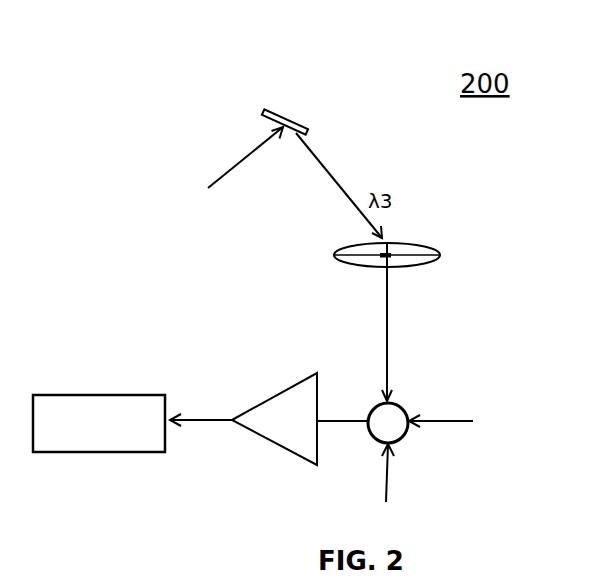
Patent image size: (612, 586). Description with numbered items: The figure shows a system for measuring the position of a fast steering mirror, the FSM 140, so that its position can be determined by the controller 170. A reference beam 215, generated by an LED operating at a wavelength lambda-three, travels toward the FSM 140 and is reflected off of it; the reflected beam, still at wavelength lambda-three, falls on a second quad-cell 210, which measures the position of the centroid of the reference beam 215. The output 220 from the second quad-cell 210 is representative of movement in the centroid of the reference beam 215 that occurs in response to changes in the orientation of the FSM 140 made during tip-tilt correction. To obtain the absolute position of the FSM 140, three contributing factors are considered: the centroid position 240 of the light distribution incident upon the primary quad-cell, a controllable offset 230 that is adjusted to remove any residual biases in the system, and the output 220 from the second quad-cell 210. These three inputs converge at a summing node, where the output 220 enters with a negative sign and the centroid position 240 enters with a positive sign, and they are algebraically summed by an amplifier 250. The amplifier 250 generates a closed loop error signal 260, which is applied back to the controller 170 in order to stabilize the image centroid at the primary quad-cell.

The fast steering mirror 140 is at (303, 118).
The controller 170 is at (99, 423).
The second quad-cell 210 is at (440, 253).
The reference beam 215 is at (202, 198).
The output 220 is at (380, 312).
The controllable offset 230 is at (395, 487).
The centroid position 240 is at (482, 420).
The amplifier 250 is at (250, 435).
The closed loop error signal 260 is at (207, 408).